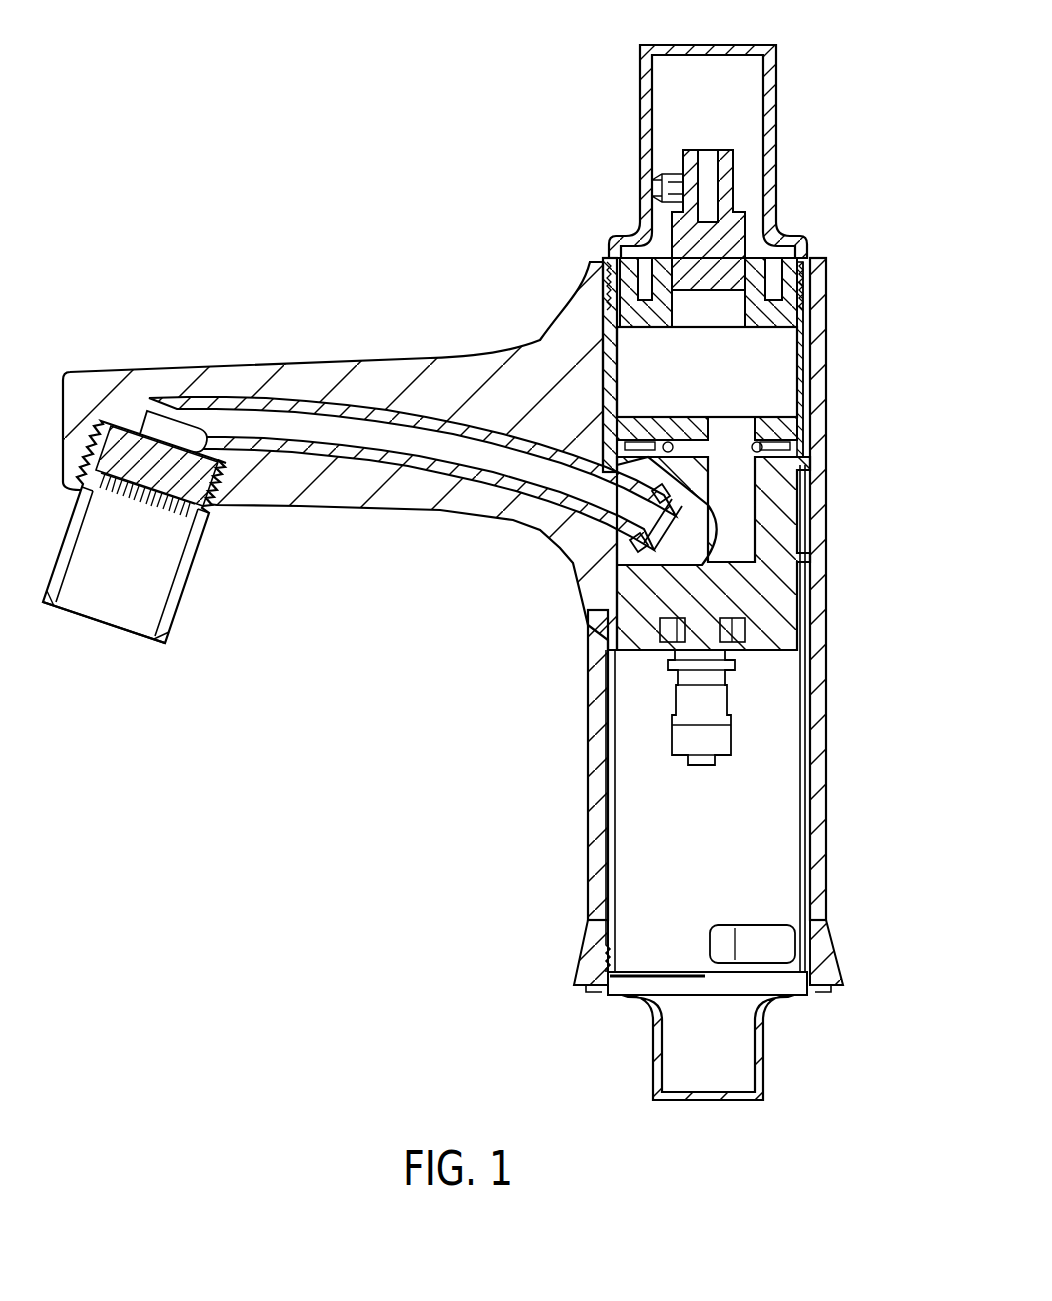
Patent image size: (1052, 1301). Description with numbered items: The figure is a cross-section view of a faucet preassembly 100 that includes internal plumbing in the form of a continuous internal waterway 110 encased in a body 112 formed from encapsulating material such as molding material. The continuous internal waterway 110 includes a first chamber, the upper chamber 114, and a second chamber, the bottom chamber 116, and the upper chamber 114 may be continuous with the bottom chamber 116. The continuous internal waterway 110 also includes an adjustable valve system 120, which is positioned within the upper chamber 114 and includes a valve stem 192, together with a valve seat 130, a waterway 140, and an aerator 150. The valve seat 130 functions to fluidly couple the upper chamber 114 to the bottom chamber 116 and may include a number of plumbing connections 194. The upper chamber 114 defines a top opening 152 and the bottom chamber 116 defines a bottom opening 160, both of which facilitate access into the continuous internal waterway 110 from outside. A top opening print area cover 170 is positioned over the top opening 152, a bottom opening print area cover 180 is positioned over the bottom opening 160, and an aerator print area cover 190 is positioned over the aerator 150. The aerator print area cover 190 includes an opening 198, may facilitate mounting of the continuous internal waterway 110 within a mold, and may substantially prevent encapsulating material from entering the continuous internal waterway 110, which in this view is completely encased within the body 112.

The faucet preassembly 100 is at (278, 143).
The continuous internal waterway 110 is at (377, 465).
The body 112 is at (514, 370).
The upper chamber 114 is at (803, 337).
The bottom chamber 116 is at (803, 571).
The adjustable valve system 120 is at (805, 363).
The valve seat 130 is at (797, 493).
The waterway 140 is at (303, 399).
The aerator 150 is at (218, 498).
The top opening 152 is at (805, 262).
The bottom opening 160 is at (676, 995).
The top opening print area cover 170 is at (640, 104).
The bottom opening print area cover 180 is at (653, 1058).
The aerator print area cover 190 is at (184, 592).
The valve stem 192 is at (730, 181).
The plumbing connections 194 is at (672, 739).
The opening 198 is at (92, 622).